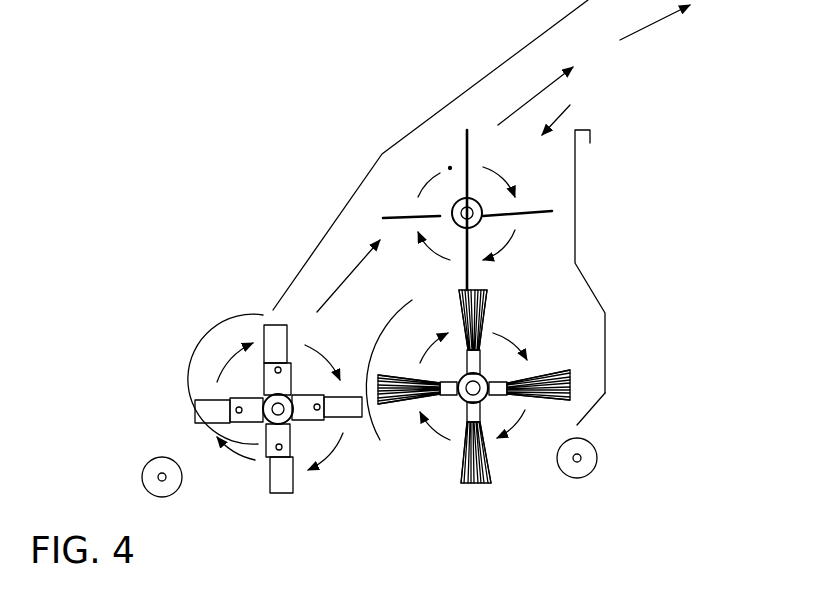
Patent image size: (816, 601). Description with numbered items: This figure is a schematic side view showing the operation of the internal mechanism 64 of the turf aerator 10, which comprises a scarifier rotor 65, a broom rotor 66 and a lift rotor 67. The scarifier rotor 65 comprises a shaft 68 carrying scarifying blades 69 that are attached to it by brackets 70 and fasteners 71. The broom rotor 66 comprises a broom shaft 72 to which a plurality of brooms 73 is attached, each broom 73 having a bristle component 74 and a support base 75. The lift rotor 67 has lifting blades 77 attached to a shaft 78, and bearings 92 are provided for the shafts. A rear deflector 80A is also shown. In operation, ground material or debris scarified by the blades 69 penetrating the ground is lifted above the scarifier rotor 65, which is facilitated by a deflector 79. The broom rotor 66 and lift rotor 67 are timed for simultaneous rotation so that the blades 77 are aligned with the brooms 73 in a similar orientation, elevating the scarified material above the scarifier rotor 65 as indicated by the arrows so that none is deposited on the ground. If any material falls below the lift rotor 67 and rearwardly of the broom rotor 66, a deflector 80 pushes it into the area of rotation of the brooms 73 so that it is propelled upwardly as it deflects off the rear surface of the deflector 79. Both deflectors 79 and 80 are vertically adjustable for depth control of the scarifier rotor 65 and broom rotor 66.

The turf aerator 10 is at (417, 83).
The rear deflector 80A is at (473, 60).
The internal mechanism 64 is at (560, 118).
The lift rotor 67 is at (530, 185).
The lifting blades 77 is at (447, 152).
The shaft 78 is at (437, 212).
The bearings 92 is at (480, 225).
The deflector 80 is at (595, 290).
The support base 75 is at (577, 425).
The broom shaft 72 is at (483, 375).
The bristle component 74 is at (570, 378).
The brooms 73 is at (498, 463).
The broom rotor 66 is at (442, 410).
The deflector 79 is at (365, 353).
The scarifying blades 69 is at (277, 325).
The shaft 68 is at (265, 405).
The scarifier rotor 65 is at (257, 457).
The fasteners 71 is at (316, 420).
The brackets 70 is at (191, 465).